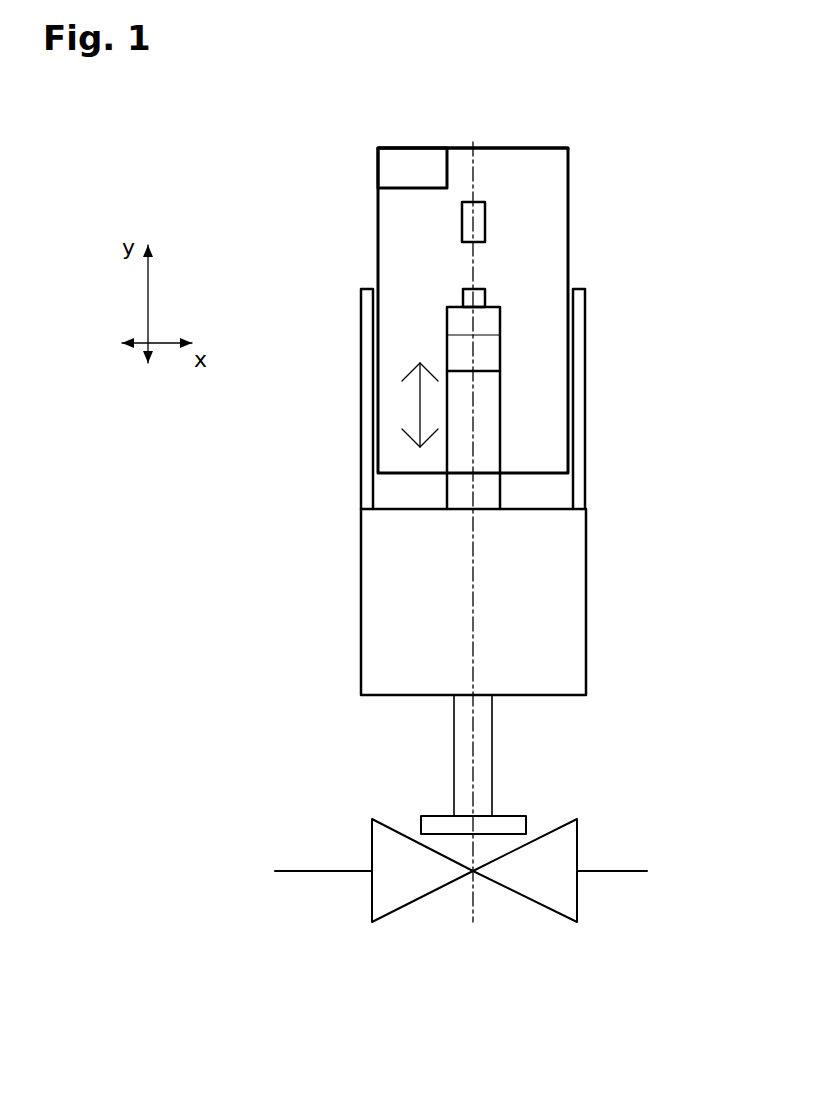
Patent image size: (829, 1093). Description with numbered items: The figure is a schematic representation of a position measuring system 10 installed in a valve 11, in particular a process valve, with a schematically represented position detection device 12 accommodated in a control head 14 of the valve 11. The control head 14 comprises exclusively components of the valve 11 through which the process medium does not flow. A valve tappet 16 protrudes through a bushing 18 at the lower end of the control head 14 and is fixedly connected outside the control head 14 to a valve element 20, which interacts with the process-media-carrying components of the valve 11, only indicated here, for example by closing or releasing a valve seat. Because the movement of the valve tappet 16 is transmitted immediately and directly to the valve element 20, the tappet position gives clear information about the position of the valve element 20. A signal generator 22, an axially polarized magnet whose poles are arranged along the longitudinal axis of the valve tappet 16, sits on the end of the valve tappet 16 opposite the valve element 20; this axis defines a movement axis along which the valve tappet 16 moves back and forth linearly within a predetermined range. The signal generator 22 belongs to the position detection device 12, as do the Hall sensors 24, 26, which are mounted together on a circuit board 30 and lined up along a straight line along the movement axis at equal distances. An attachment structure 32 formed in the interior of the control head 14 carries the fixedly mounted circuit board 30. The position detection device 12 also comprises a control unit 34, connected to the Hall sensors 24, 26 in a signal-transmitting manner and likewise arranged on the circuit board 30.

The position measuring system 10 is at (165, 158).
The valve 11 is at (713, 274).
The position detection device 12 is at (427, 268).
The control head 14 is at (578, 241).
The valve tappet 16 is at (487, 452).
The bushing 18 is at (502, 507).
The valve element 20 is at (513, 822).
The signal generator 22 is at (492, 347).
The Hall sensor 24 is at (485, 208).
The Hall sensor 26 is at (485, 290).
The circuit board 30 is at (568, 166).
The attachment structure 32 is at (580, 360).
The control unit 34 is at (393, 162).